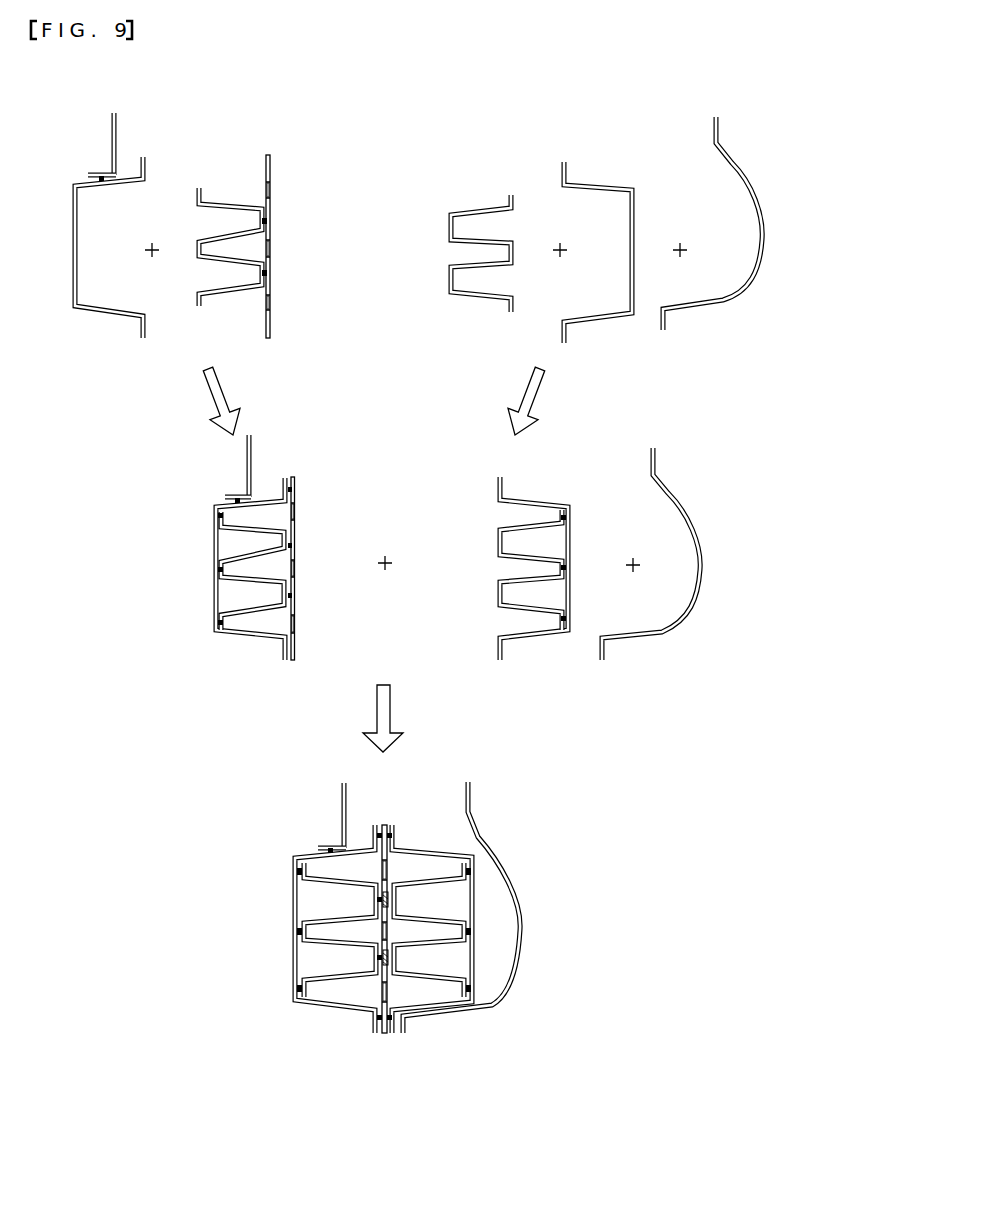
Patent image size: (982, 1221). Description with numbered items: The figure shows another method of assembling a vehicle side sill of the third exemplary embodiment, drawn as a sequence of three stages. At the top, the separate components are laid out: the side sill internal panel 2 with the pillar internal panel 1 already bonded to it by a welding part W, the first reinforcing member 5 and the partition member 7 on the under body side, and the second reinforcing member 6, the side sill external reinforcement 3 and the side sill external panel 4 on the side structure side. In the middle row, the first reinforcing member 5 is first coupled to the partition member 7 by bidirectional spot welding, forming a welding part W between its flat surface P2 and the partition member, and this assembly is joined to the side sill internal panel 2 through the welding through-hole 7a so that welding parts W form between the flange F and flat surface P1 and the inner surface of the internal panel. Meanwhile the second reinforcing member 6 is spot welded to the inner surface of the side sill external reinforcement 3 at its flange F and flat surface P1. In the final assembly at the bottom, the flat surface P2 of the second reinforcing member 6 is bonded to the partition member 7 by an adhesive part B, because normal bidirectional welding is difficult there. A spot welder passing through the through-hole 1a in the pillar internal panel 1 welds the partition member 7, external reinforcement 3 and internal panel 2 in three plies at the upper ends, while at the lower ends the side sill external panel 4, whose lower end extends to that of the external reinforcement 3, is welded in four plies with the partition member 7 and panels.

The pillar internal panel 1 is at (116, 117).
The through-hole for welding 1a is at (110, 161).
The side sill internal panel 2 is at (73, 247).
The side sill external reinforcement 3 is at (580, 185).
The side sill external panel 4 is at (719, 128).
The first reinforcing member 5 is at (222, 205).
The second reinforcing member 6 is at (477, 208).
The partition member 7 is at (270, 170).
The welding through-hole 7a is at (270, 299).
The welding part W is at (296, 489).
The flat surface P1 is at (232, 582).
The flat surface P2 is at (276, 556).
The flange F is at (227, 628).
The adhesive part B is at (393, 900).